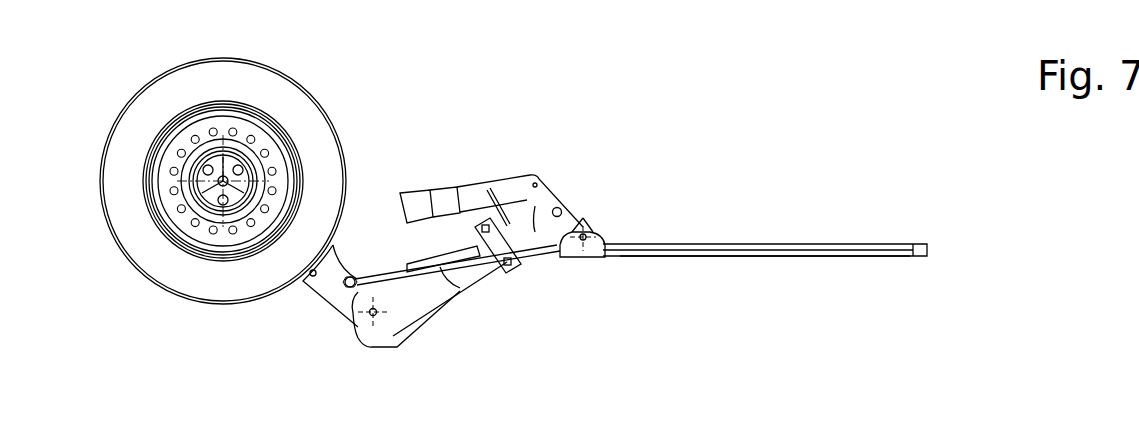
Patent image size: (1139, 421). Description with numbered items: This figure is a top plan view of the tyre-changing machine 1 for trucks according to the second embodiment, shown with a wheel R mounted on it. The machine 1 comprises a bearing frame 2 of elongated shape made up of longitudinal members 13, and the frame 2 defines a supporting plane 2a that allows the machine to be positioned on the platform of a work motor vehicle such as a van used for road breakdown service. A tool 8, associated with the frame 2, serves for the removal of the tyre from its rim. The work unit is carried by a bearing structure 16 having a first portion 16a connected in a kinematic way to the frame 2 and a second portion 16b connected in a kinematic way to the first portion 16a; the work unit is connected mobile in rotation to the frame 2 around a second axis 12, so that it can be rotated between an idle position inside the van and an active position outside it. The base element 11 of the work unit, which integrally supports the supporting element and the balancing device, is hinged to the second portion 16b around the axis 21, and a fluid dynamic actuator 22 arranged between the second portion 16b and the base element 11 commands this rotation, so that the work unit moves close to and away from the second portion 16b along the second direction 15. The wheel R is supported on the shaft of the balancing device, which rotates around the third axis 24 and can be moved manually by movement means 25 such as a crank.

The wheel R is at (135, 117).
The tyre-changing machine 1 is at (763, 122).
The bearing frame 2 is at (852, 242).
The supporting plane 2a is at (770, 257).
The tool 8 is at (413, 200).
The base element 11 is at (328, 290).
The second axis 12 is at (567, 258).
The longitudinal members 13 is at (747, 245).
The second direction 15 is at (312, 83).
The bearing structure 16 is at (371, 228).
The first portion 16a is at (535, 232).
The second portion 16b is at (405, 308).
The axis 21 is at (357, 327).
The fluid dynamic actuator 22 is at (436, 266).
The third axis 24 is at (158, 217).
The movement means 25 is at (252, 205).